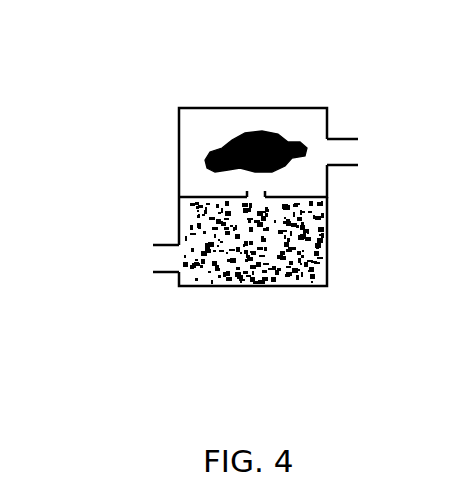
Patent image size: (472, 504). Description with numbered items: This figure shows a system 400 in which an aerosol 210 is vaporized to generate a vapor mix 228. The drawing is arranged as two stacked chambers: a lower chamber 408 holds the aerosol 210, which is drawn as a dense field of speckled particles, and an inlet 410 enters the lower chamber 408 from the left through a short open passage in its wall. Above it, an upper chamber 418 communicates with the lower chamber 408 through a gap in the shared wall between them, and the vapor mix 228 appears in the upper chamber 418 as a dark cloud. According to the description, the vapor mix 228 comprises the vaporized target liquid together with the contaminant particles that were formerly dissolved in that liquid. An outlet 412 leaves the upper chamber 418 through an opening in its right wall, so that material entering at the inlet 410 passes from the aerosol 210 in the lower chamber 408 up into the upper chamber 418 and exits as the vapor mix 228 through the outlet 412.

The system 400 is at (119, 68).
The upper chamber 418 is at (170, 147).
The vapor mix 228 is at (245, 120).
The outlet 412 is at (352, 120).
The lower chamber 408 is at (342, 249).
The inlet 410 is at (150, 287).
The aerosol 210 is at (263, 291).